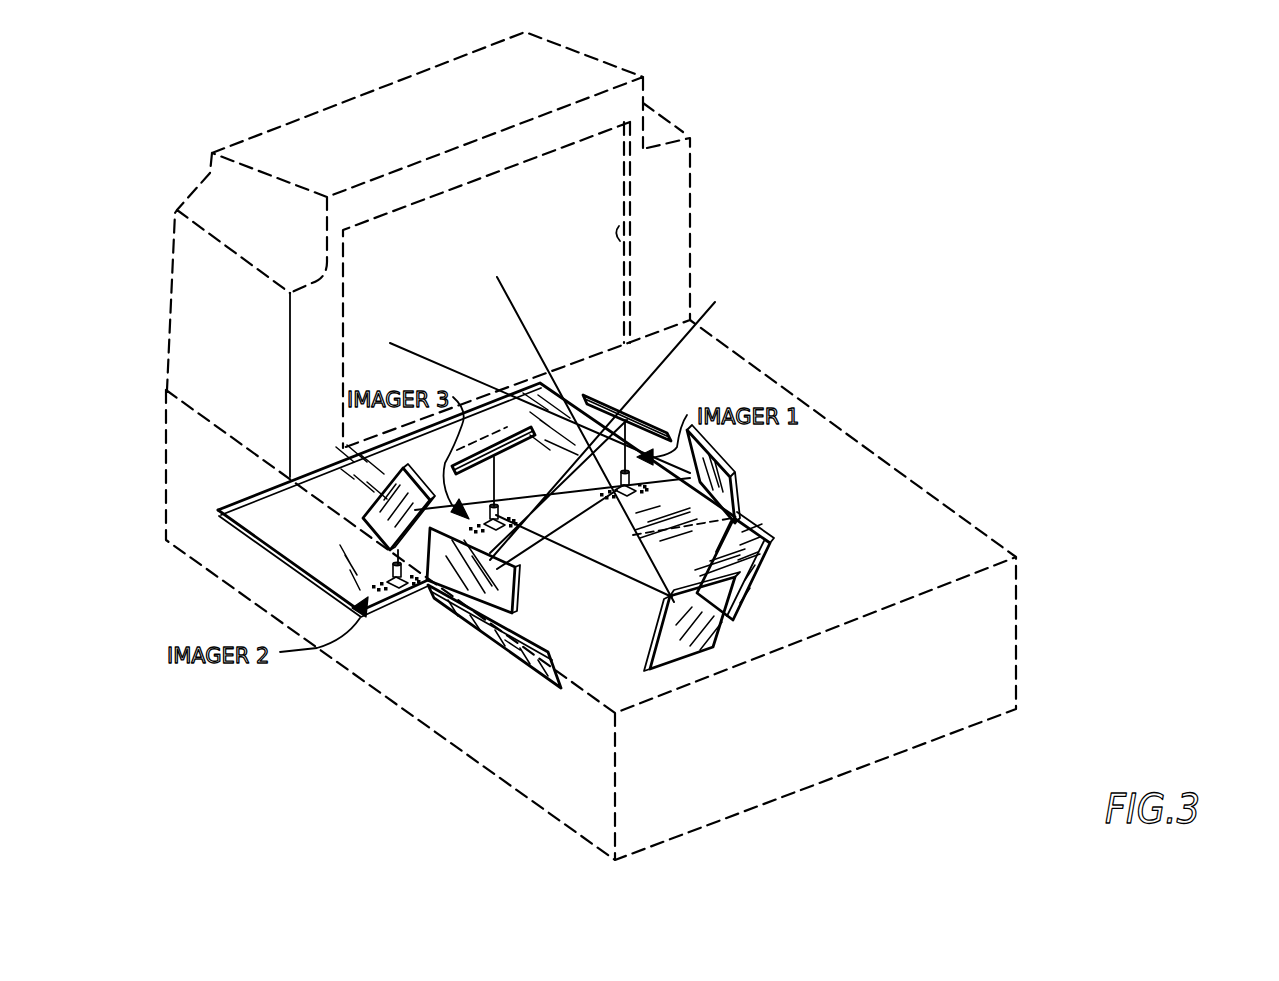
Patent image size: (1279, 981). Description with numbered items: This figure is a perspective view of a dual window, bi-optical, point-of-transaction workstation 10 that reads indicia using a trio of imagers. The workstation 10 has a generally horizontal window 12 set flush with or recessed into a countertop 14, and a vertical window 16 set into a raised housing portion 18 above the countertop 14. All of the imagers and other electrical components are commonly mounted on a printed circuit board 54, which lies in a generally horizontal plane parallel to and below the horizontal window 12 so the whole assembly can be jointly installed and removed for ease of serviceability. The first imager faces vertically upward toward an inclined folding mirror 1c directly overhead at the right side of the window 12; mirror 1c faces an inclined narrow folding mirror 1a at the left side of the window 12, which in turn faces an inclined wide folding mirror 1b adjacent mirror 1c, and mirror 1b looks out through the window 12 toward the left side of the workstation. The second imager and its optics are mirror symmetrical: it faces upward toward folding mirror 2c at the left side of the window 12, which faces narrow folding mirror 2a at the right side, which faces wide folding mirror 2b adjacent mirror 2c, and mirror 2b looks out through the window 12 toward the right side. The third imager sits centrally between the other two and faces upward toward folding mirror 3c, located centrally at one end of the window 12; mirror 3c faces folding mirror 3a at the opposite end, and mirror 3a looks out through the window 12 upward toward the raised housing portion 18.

The point-of-transaction workstation 10 is at (797, 216).
The generally horizontal window 12 is at (610, 562).
The countertop 14 is at (920, 488).
The vertical window 16 is at (618, 233).
The raised housing portion 18 is at (323, 107).
The printed circuit board 54 is at (365, 611).
The inclined narrow folding mirror 1a is at (511, 598).
The inclined wide folding mirror 1b is at (748, 580).
The inclined folding mirror 1c is at (645, 430).
The inclined narrow folding mirror 2a is at (723, 463).
The inclined wide folding mirror 2b is at (543, 652).
The inclined folding mirror 2c is at (367, 522).
The inclined folding mirror 3a is at (653, 667).
The inclined folding mirror 3c is at (507, 430).